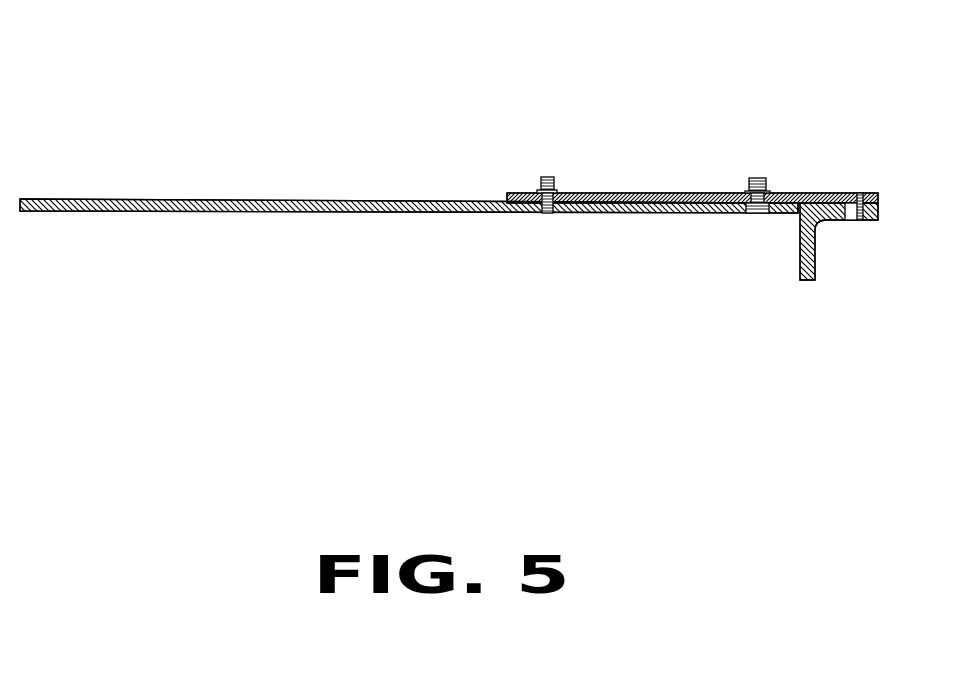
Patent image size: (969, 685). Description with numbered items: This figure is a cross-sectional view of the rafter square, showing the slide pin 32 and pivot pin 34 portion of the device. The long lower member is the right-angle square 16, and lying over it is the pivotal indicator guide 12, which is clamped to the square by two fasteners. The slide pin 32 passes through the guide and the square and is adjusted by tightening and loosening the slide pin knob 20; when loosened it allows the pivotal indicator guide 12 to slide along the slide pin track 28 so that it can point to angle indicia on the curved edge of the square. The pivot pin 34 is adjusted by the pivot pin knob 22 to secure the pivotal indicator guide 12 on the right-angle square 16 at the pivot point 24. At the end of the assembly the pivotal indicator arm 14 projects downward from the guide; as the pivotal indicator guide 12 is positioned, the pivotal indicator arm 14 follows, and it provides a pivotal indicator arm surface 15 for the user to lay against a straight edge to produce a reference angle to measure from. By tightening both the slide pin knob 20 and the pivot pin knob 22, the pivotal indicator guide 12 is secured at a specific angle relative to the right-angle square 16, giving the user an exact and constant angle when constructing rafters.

The pivotal indicator guide 12 is at (575, 192).
The pivotal indicator arm 14 is at (800, 250).
The pivotal indicator arm surface 15 is at (795, 225).
The right-angle square 16 is at (257, 213).
The slide pin knob 20 is at (533, 160).
The pivot pin knob 22 is at (733, 109).
The pivot point 24 is at (775, 197).
The slide pin track 28 is at (548, 213).
The slide pin 32 is at (542, 178).
The pivot pin 34 is at (758, 178).